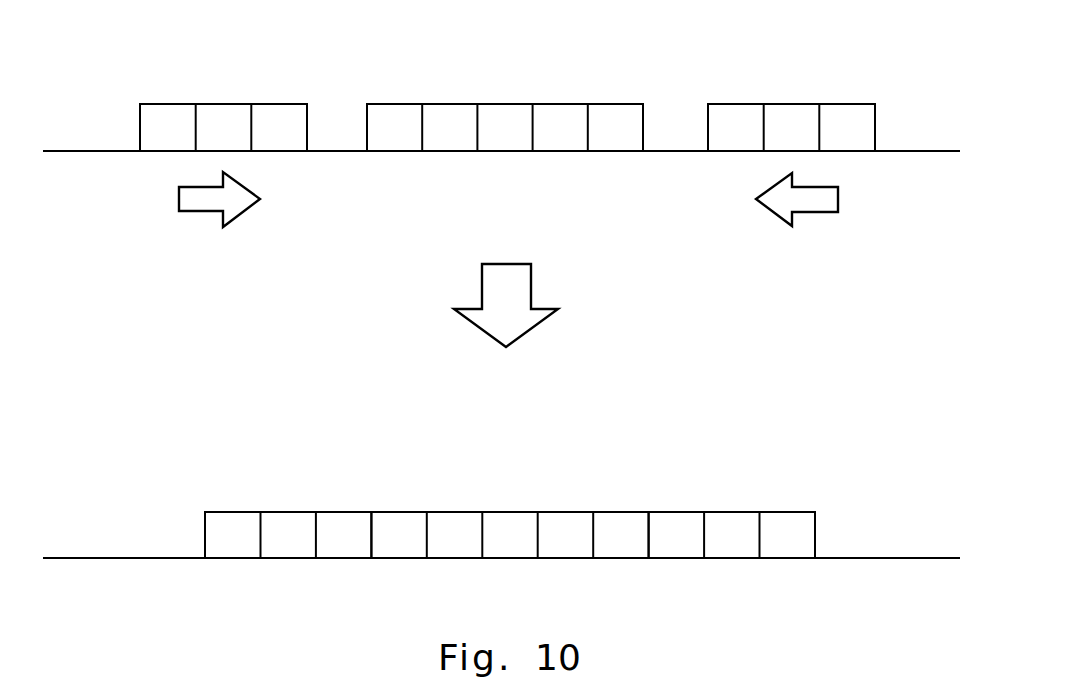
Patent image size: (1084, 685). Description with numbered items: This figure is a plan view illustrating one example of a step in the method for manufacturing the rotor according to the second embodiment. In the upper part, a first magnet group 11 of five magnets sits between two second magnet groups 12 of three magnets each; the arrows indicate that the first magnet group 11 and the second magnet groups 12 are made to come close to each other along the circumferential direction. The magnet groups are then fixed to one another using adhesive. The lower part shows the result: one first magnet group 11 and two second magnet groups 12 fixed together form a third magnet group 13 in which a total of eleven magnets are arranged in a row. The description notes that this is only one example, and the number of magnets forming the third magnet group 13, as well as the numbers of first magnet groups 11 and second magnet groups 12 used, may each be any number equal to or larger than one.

The first magnet group 11 is at (367, 93).
The second magnet group 12 is at (140, 93).
The third magnet group 13 is at (813, 396).